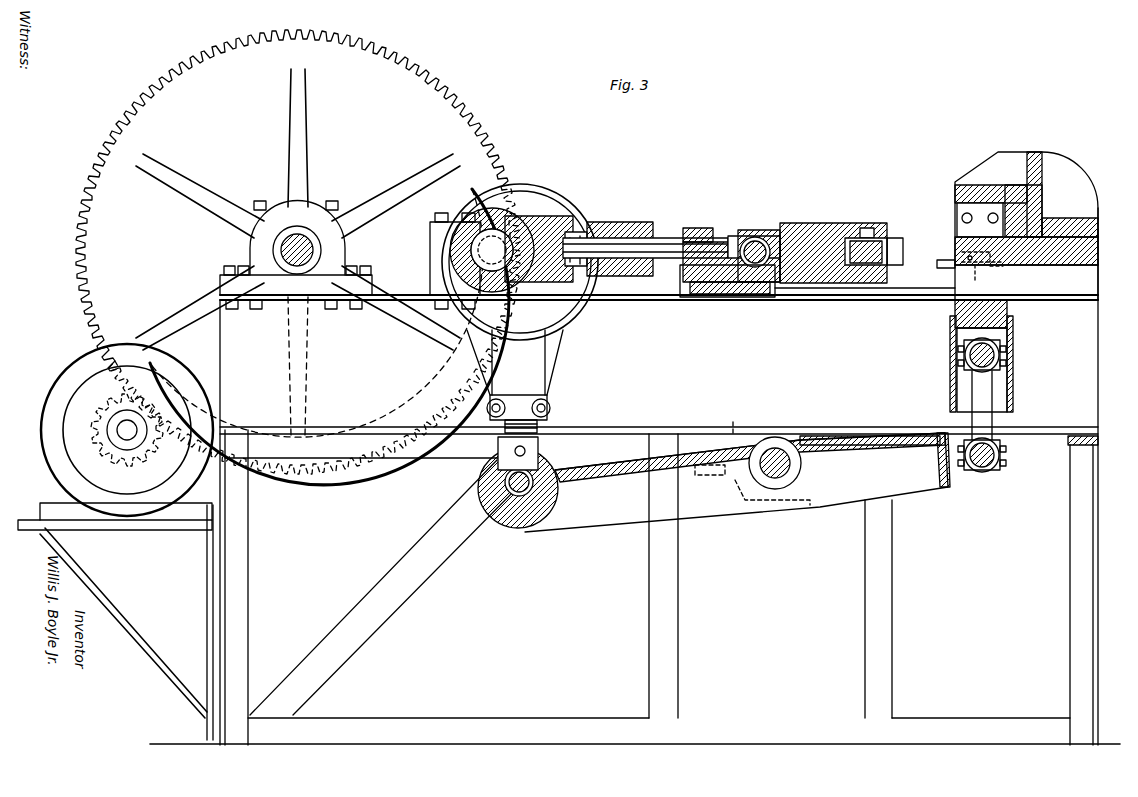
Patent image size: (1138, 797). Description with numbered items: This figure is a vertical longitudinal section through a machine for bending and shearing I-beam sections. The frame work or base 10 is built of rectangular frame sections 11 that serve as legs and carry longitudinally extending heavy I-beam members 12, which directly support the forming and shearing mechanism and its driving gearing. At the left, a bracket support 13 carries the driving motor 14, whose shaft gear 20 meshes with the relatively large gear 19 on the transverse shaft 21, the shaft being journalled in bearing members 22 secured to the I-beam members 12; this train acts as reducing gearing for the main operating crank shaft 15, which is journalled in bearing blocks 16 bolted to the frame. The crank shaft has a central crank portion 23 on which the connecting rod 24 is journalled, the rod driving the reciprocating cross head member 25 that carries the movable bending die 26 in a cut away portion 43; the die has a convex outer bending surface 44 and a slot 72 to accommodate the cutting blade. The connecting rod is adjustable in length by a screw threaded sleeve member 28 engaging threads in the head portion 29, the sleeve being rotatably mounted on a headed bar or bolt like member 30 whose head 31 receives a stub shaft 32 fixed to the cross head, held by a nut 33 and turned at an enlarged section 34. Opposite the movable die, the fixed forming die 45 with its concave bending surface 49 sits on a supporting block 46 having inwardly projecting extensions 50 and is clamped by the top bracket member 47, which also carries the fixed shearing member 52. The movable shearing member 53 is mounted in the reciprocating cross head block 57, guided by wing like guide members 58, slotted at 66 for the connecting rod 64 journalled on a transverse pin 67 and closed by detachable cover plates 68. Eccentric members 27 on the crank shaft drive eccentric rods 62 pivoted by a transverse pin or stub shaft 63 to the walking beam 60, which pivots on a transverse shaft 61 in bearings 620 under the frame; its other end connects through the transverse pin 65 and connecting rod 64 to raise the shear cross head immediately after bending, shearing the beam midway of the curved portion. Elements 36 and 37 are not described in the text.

The frame work or base 10 is at (1098, 502).
The rectangular frame sections 11 is at (676, 698).
The I-beam members 12 is at (1090, 410).
The bracket support 13 is at (86, 578).
The driving motor 14 is at (58, 470).
The main operating crank shaft 15 is at (545, 210).
The bearing blocks 16 is at (520, 202).
The gear 19 is at (449, 105).
The gear 20 is at (126, 423).
The transverse shaft 21 is at (299, 243).
The bearing members 22 is at (252, 236).
The central crank portion 23 is at (430, 242).
The connecting rod 24 is at (542, 236).
The reciprocating cross head member 25 is at (802, 248).
The movable bending die 26 is at (872, 240).
The eccentric members 27 is at (576, 318).
The screw threaded sleeve member 28 is at (661, 240).
The head portion of the connecting rod 29 is at (606, 240).
The headed bar or bolt like member 30 is at (706, 240).
The head 31 is at (733, 230).
The stub shaft 32 is at (760, 237).
The nut 33 is at (585, 236).
The enlarged section 34 is at (693, 228).
The guide 36 is at (745, 303).
The guide bar 37 is at (795, 303).
The cut away portion 43 is at (852, 244).
The convex outer bending surface 44 is at (897, 248).
The fixed forming die 45 is at (1098, 251).
The supporting block 46 is at (1086, 286).
The top bracket member 47 is at (1090, 186).
The concave bending surface 49 is at (1005, 266).
The inwardly projecting extensions 50 is at (953, 281).
The fixed shearing member 52 is at (957, 209).
The movable shearing member 53 is at (967, 252).
The reciprocating cross head block 57 is at (953, 313).
The wing like guide members 58 is at (1005, 290).
The walking beam 60 is at (648, 468).
The transverse shaft 61 is at (758, 478).
The eccentric rods 62 is at (546, 396).
The transverse pin or stub shaft 63 is at (540, 496).
The connecting rod 64 is at (993, 401).
The transverse pin 65 is at (990, 475).
The slot 66 is at (996, 344).
The transverse pin 67 is at (992, 355).
The detachable cover plates 68 is at (952, 372).
The slot 72 is at (938, 262).
The bearings 620 is at (752, 456).